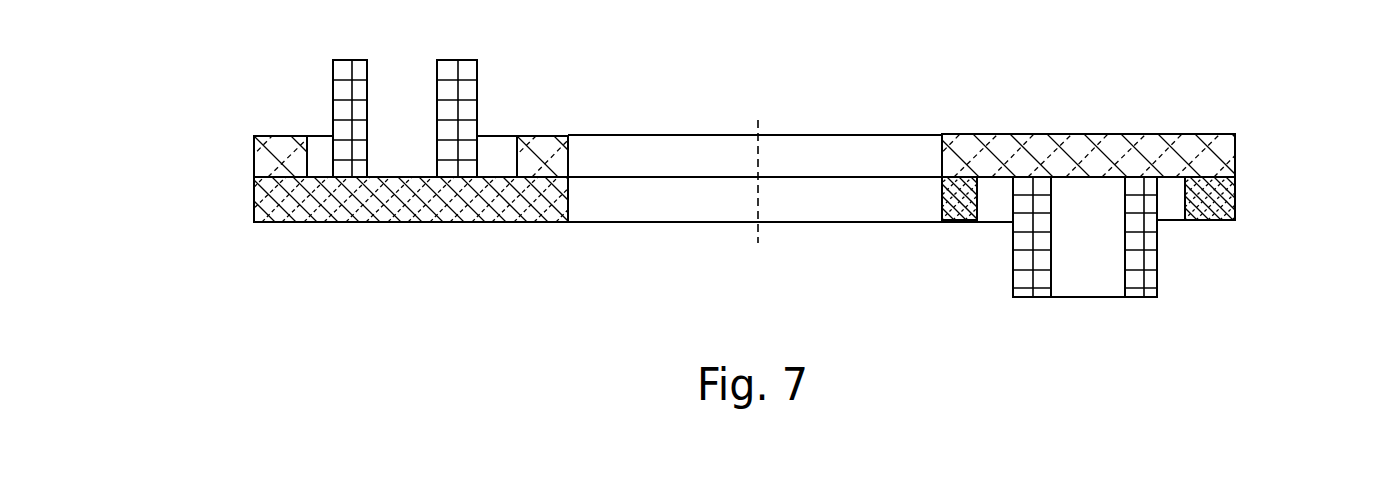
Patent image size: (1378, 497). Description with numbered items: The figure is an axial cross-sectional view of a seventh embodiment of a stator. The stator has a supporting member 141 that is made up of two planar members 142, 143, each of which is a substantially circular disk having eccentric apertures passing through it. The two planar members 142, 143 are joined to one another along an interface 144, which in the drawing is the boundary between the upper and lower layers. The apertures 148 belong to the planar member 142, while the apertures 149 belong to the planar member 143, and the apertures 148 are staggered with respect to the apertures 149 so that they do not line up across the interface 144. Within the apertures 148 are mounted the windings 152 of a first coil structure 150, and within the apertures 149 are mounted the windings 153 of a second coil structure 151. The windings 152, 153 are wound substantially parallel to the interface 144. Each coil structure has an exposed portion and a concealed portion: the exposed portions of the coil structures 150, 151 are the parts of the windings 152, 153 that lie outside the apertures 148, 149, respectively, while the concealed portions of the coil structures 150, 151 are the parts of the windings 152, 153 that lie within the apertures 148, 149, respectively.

The supporting member 141 is at (248, 160).
The planar member 142 is at (1183, 150).
The planar member 143 is at (1238, 199).
The interface 144 is at (822, 177).
The apertures 148 is at (500, 145).
The apertures 149 is at (1173, 210).
The first coil structure 150 is at (510, 82).
The second coil structure 151 is at (918, 260).
The windings 152 is at (425, 127).
The windings 153 is at (1112, 252).